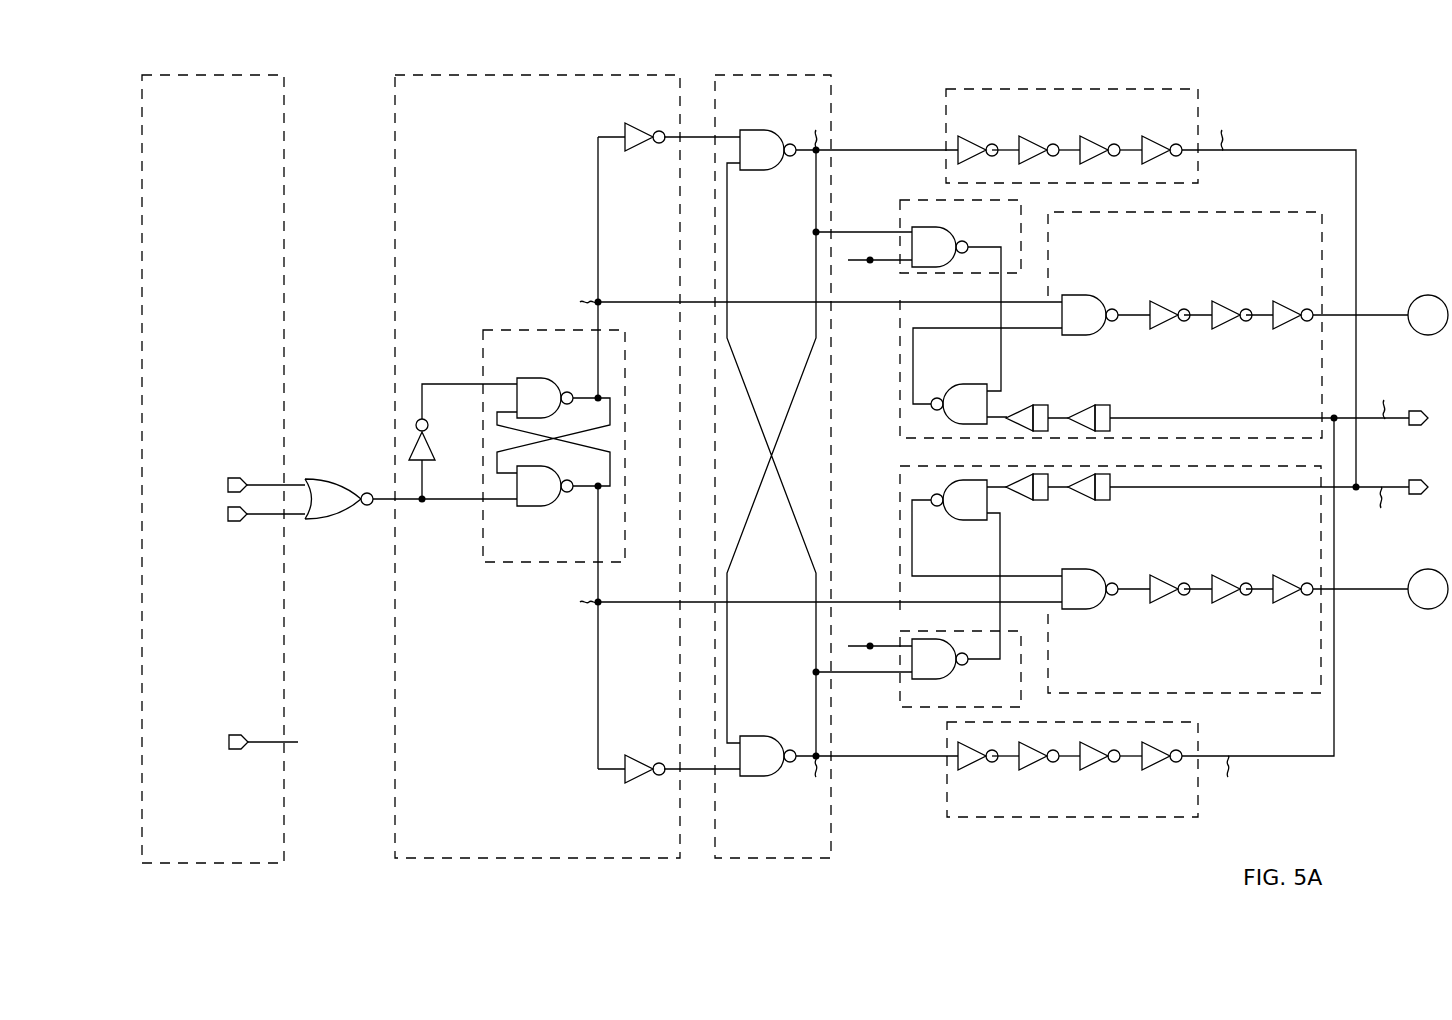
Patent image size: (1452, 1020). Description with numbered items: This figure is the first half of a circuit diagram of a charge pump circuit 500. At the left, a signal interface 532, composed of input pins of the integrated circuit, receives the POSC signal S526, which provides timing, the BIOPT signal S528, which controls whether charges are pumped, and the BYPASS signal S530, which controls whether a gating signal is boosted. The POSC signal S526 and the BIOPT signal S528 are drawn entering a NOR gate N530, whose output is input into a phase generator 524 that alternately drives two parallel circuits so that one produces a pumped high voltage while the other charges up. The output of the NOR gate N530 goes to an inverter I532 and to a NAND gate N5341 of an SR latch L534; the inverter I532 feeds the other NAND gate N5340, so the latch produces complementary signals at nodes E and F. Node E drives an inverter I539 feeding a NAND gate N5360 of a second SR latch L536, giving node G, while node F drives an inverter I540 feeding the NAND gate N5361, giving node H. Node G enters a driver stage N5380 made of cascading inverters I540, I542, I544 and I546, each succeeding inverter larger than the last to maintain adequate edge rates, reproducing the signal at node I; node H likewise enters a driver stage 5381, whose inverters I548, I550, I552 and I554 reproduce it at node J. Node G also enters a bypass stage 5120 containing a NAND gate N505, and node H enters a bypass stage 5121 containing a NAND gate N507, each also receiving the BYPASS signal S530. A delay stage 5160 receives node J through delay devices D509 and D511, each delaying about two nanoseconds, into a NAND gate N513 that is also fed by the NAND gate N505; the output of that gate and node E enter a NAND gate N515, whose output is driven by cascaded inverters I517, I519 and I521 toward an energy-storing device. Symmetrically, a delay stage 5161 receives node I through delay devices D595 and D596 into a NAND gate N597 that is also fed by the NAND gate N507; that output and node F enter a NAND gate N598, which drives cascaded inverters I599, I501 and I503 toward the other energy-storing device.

The charge pump circuit 500 is at (1380, 111).
The signal interface 532 is at (228, 75).
The phase generator 524 is at (500, 75).
The SR latch L536 is at (778, 75).
The SR latch L534 is at (495, 330).
The driver stage N5380 is at (1068, 89).
The driver stage 5381 is at (1070, 817).
The bypass stage 5120 is at (900, 200).
The bypass stage 5121 is at (900, 707).
The delay stage 5160 is at (1275, 212).
The delay stage 5161 is at (1275, 693).
The POSC signal S526 is at (236, 478).
The BIOPT signal S528 is at (236, 521).
The BYPASS signal S530 is at (236, 735).
The NOR gate N530 is at (327, 478).
The inverter I532 is at (433, 447).
The NAND gate N5340 is at (530, 378).
The NAND gate N5341 is at (530, 507).
The inverter I539 is at (640, 129).
The inverter I540 is at (640, 778).
The NAND gate N5360 is at (757, 130).
The NAND gate N5361 is at (757, 777).
The NAND gate N505 is at (929, 235).
The NAND gate N507 is at (937, 680).
The NAND gate N513 is at (967, 383).
The NAND gate N515 is at (1085, 295).
The NAND gate N597 is at (967, 522).
The NAND gate N598 is at (1085, 609).
The inverter I542 is at (1035, 140).
The inverter I544 is at (1096, 140).
The inverter I546 is at (1158, 140).
The inverter I548 is at (974, 770).
The inverter I550 is at (1035, 770).
The inverter I552 is at (1096, 770).
The inverter I554 is at (1158, 770).
The inverter I517 is at (1165, 304).
The inverter I519 is at (1227, 304).
The inverter I521 is at (1288, 304).
The inverter I599 is at (1165, 602).
The inverter I501 is at (1227, 602).
The inverter I503 is at (1288, 602).
The delay device D511 is at (1040, 404).
The delay device D509 is at (1102, 404).
The delay device D596 is at (1040, 501).
The delay device D595 is at (1102, 501).